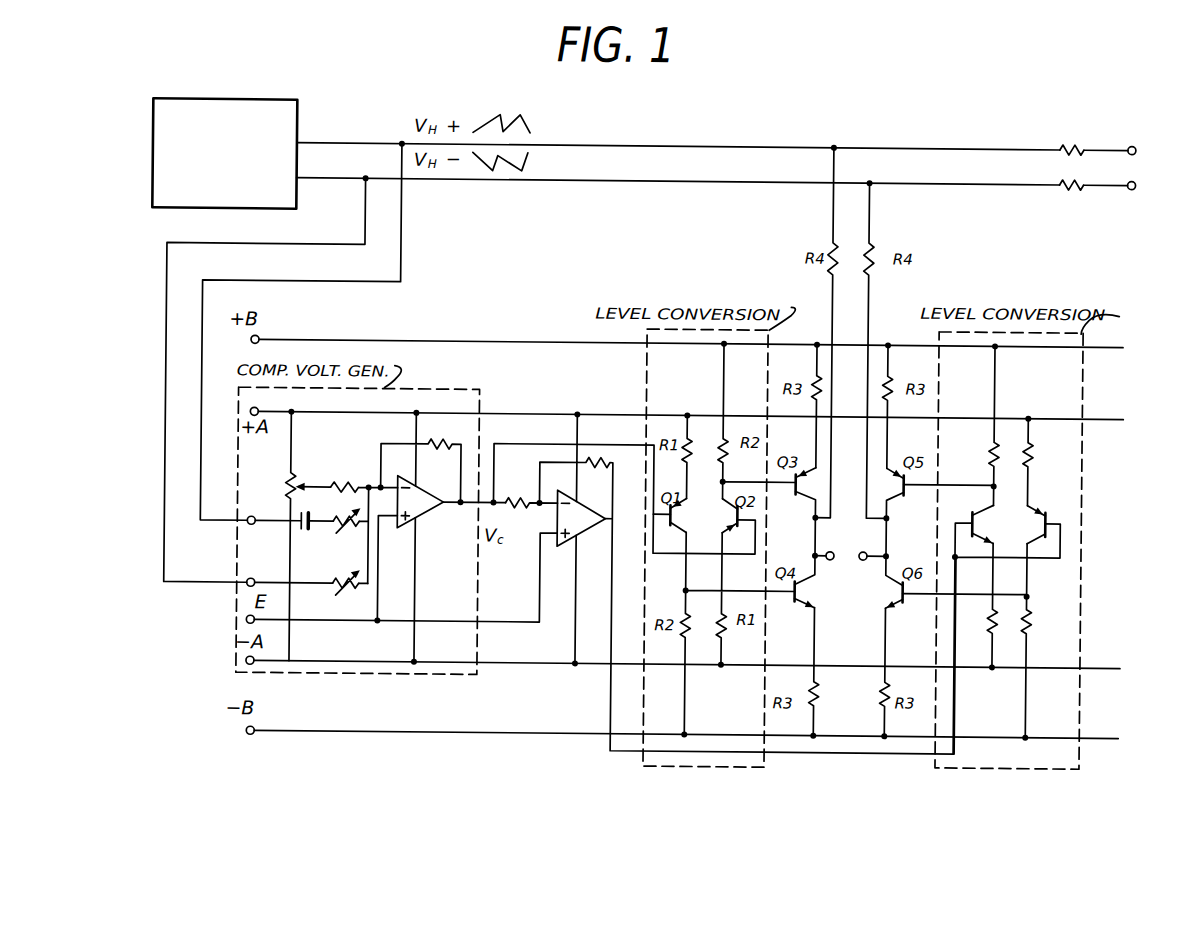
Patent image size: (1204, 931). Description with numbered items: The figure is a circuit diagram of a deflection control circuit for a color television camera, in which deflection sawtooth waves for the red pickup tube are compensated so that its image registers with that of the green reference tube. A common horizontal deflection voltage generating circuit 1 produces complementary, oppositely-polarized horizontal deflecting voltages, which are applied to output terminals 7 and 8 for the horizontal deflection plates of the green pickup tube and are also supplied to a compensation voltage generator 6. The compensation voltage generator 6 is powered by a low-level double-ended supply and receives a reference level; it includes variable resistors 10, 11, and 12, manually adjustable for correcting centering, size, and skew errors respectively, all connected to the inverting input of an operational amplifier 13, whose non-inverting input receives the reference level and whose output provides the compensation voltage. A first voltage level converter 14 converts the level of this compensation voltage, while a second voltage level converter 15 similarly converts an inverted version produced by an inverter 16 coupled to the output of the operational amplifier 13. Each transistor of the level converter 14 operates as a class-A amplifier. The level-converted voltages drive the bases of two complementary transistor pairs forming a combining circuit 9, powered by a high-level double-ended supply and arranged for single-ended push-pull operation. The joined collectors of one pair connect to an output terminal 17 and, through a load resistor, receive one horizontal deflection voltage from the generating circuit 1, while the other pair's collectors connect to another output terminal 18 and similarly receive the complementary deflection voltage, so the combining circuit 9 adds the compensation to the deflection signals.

The deflection voltage generator 1 is at (295, 118).
The compensation voltage generator 6 is at (480, 396).
The output terminal 7 is at (1132, 142).
The output terminal 8 is at (1129, 185).
The combining circuit 9 is at (855, 632).
The variable resistor 10 is at (285, 490).
The variable resistor 11 is at (346, 541).
The variable resistor 12 is at (351, 598).
The operational amplifier 13 is at (428, 514).
The first voltage level converter 14 is at (644, 352).
The second voltage level converter 15 is at (1083, 379).
The inverter 16 is at (588, 531).
The output terminal 17 is at (840, 545).
The output terminal 18 is at (864, 558).